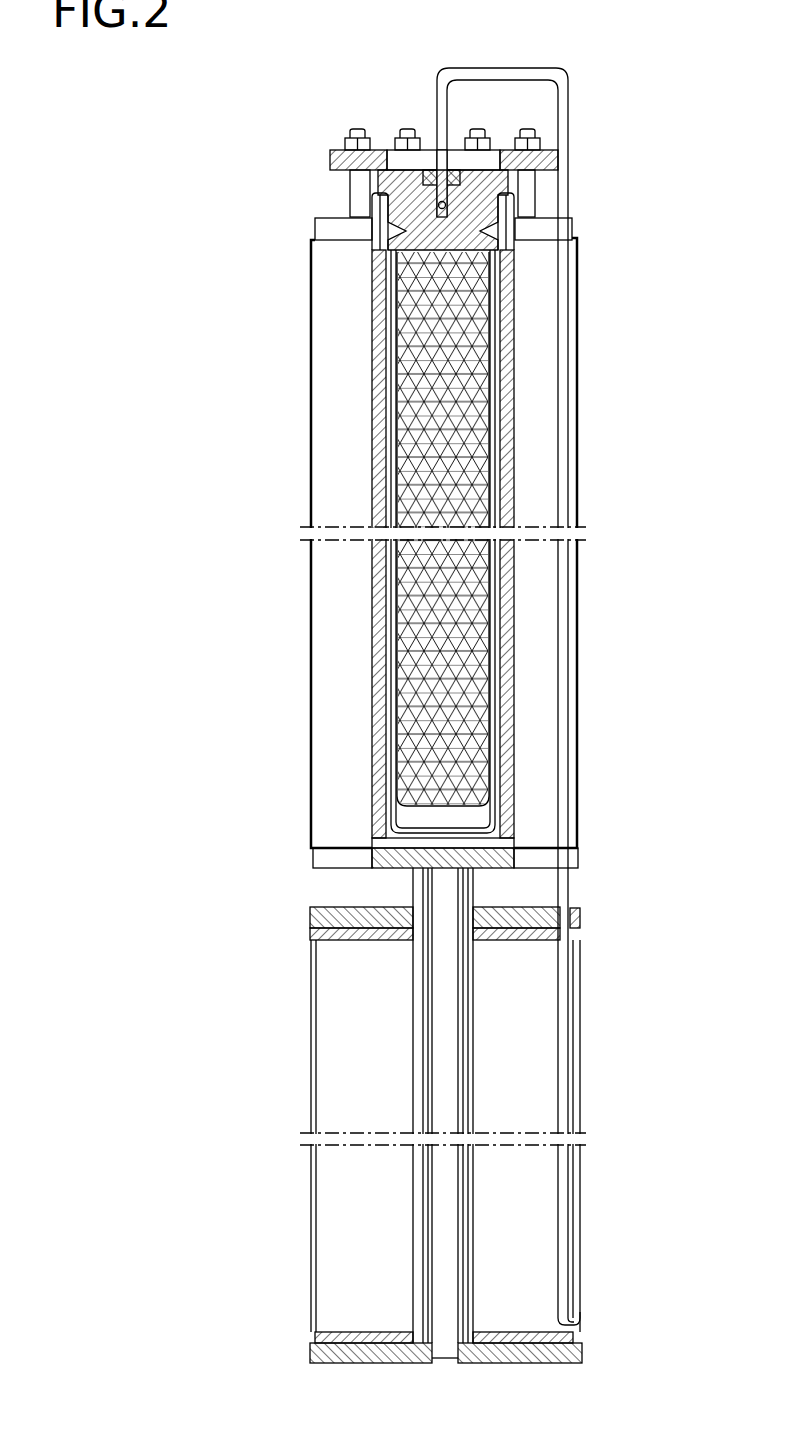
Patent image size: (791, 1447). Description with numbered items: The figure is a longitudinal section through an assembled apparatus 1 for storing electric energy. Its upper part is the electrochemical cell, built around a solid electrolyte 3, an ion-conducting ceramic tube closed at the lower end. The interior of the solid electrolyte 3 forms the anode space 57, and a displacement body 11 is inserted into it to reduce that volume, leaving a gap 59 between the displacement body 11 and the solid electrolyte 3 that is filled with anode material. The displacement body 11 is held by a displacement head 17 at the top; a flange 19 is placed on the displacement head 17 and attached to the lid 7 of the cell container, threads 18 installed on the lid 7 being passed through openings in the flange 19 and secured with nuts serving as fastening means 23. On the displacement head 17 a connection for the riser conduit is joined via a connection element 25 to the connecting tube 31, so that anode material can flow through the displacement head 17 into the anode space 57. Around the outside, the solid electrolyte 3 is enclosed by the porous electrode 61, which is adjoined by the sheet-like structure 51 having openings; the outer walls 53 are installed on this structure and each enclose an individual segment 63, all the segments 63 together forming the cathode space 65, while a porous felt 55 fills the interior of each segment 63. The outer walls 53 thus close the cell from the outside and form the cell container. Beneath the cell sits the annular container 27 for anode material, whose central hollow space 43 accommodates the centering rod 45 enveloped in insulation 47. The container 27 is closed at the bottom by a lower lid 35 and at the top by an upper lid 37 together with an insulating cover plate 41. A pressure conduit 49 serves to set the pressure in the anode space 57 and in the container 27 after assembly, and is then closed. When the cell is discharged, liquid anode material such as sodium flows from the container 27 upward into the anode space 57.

The apparatus 1 is at (300, 125).
The solid electrolyte 3 is at (375, 815).
The lid 7 is at (322, 230).
The displacement body 11 is at (490, 292).
The displacement head 17 is at (482, 200).
The threads 18 is at (357, 192).
The flange 19 is at (557, 153).
The fastening means 23 is at (398, 138).
The connection element 25 is at (430, 163).
The container for anode material 27 is at (310, 1045).
The connecting tube 31 is at (510, 68).
The lower lid 35 is at (575, 1336).
The upper lid 37 is at (310, 928).
The insulating cover plate 41 is at (582, 920).
The hollow space 43 is at (472, 1230).
The centering rod 45 is at (425, 1250).
The insulation 47 is at (470, 1105).
The pressure conduit 49 is at (310, 1350).
The sheet-like structure having openings 51 is at (513, 348).
The outer walls 53 is at (310, 323).
The porous felt 55 is at (285, 478).
The anode space 57 is at (495, 798).
The gap 59 is at (500, 744).
The porous electrode 61 is at (372, 710).
The segments 63 is at (540, 597).
The cathode space 65 is at (335, 573).